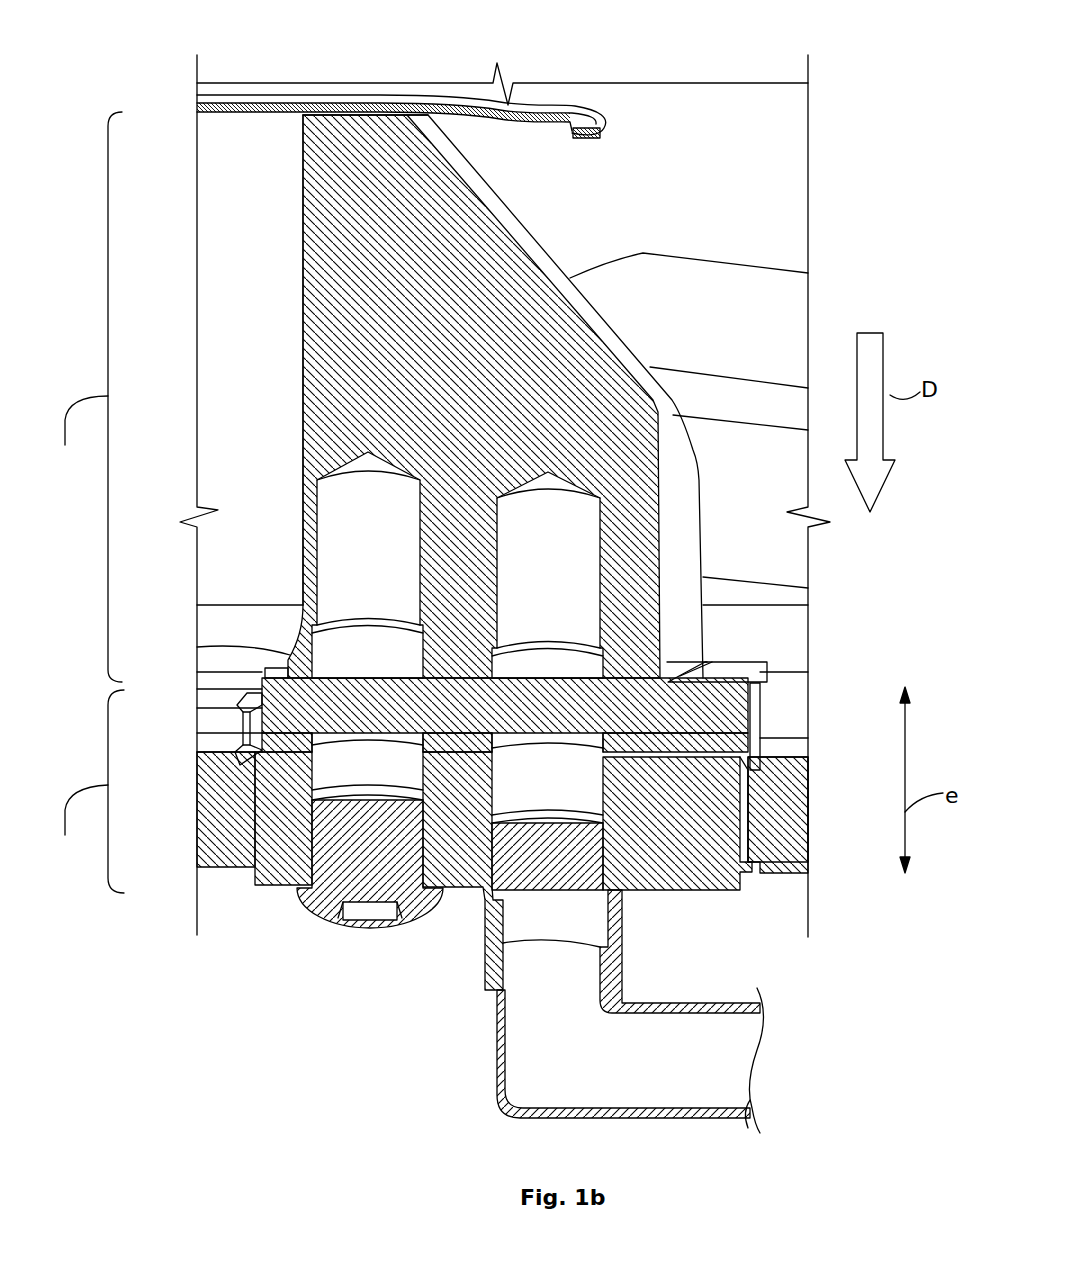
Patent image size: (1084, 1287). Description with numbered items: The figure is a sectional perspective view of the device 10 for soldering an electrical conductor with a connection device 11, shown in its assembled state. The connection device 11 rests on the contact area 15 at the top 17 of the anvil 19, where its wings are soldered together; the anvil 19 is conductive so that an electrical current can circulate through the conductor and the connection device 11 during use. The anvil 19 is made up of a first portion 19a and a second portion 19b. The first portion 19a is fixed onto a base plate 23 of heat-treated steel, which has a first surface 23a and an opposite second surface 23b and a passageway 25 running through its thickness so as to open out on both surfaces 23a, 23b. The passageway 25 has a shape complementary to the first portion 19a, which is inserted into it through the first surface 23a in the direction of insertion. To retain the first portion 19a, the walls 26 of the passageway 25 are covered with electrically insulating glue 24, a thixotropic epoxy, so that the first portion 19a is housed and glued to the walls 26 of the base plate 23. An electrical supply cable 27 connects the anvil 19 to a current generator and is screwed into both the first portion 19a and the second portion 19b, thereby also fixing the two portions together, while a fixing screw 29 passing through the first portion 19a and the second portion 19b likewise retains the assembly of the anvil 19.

The device 10 is at (849, 147).
The connection device 11 is at (582, 112).
The contact area 15 is at (322, 117).
The top 17 is at (325, 175).
The anvil 19 is at (322, 315).
The first portion 19a is at (83, 791).
The second portion 19b is at (82, 397).
The base plate 23 is at (787, 830).
The first surface 23a is at (797, 647).
The second surface 23b is at (778, 880).
The electrically insulating glue 24 is at (255, 865).
The passageway 25 is at (762, 690).
The walls 26 is at (745, 800).
The electrical supply cable 27 is at (560, 1020).
The fixing screw 29 is at (357, 922).